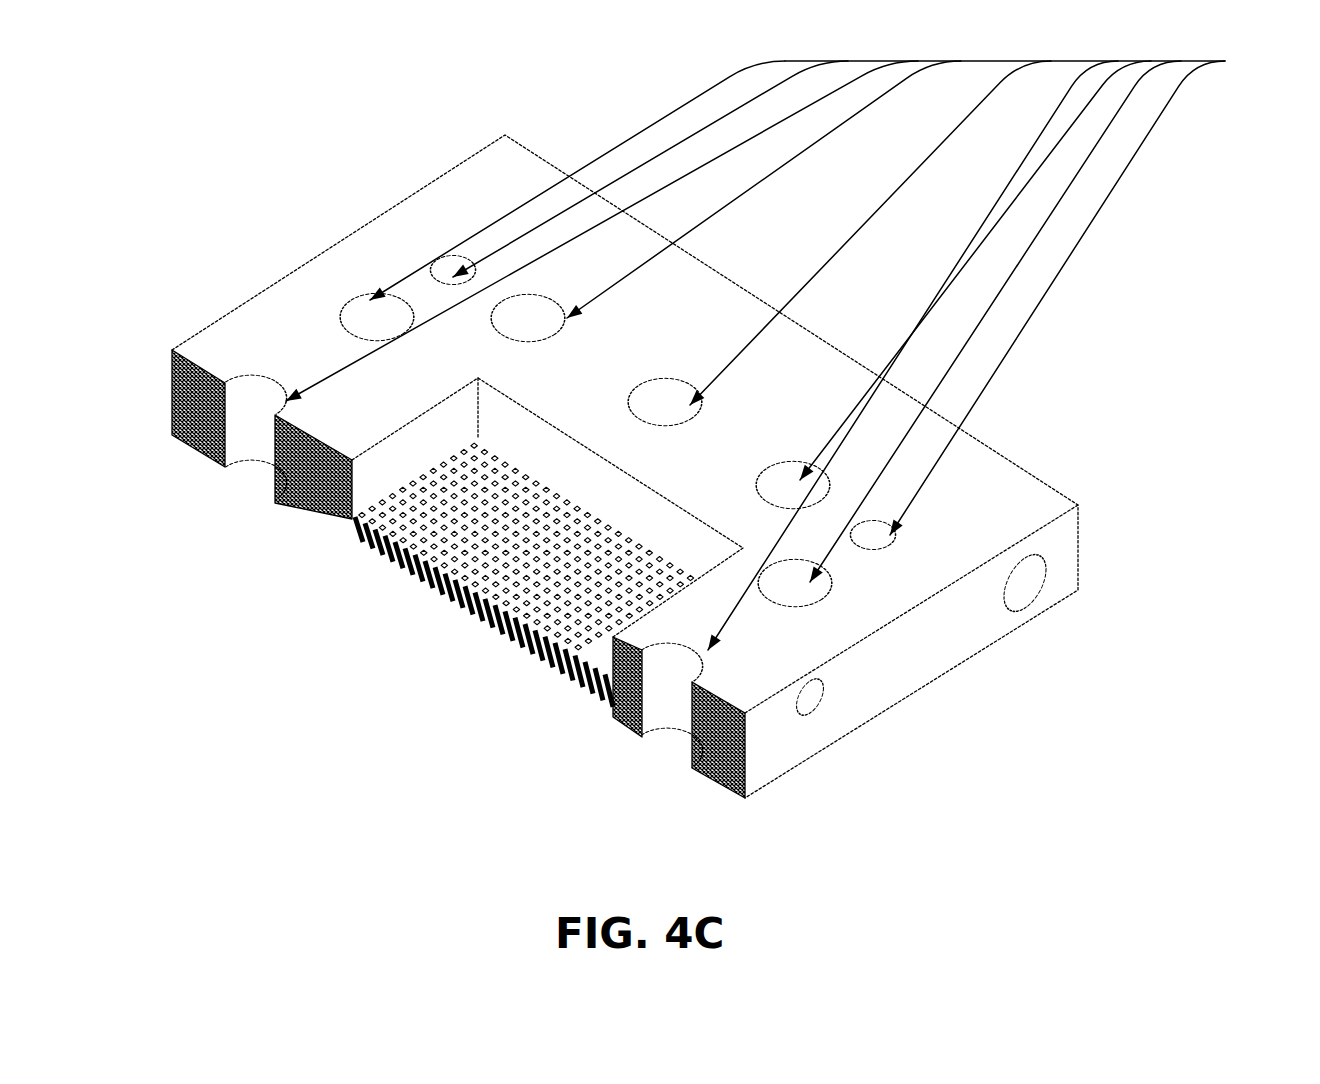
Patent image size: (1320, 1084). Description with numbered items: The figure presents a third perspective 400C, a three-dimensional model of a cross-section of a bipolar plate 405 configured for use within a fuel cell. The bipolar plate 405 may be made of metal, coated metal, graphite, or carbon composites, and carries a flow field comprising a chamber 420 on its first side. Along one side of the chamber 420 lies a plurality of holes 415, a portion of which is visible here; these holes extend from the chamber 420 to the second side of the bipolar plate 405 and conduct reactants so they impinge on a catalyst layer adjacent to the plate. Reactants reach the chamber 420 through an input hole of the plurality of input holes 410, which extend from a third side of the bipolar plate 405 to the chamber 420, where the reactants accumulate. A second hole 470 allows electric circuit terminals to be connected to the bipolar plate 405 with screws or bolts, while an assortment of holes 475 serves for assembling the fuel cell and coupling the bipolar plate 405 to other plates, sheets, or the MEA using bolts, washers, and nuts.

The third perspective 400C is at (226, 116).
The bipolar plate 405 is at (303, 262).
The plurality of input holes 410 is at (827, 673).
The plurality of holes 415 is at (612, 530).
The chamber 420 is at (517, 402).
The second hole 470 is at (1035, 557).
The assortment of holes 475 is at (1225, 61).